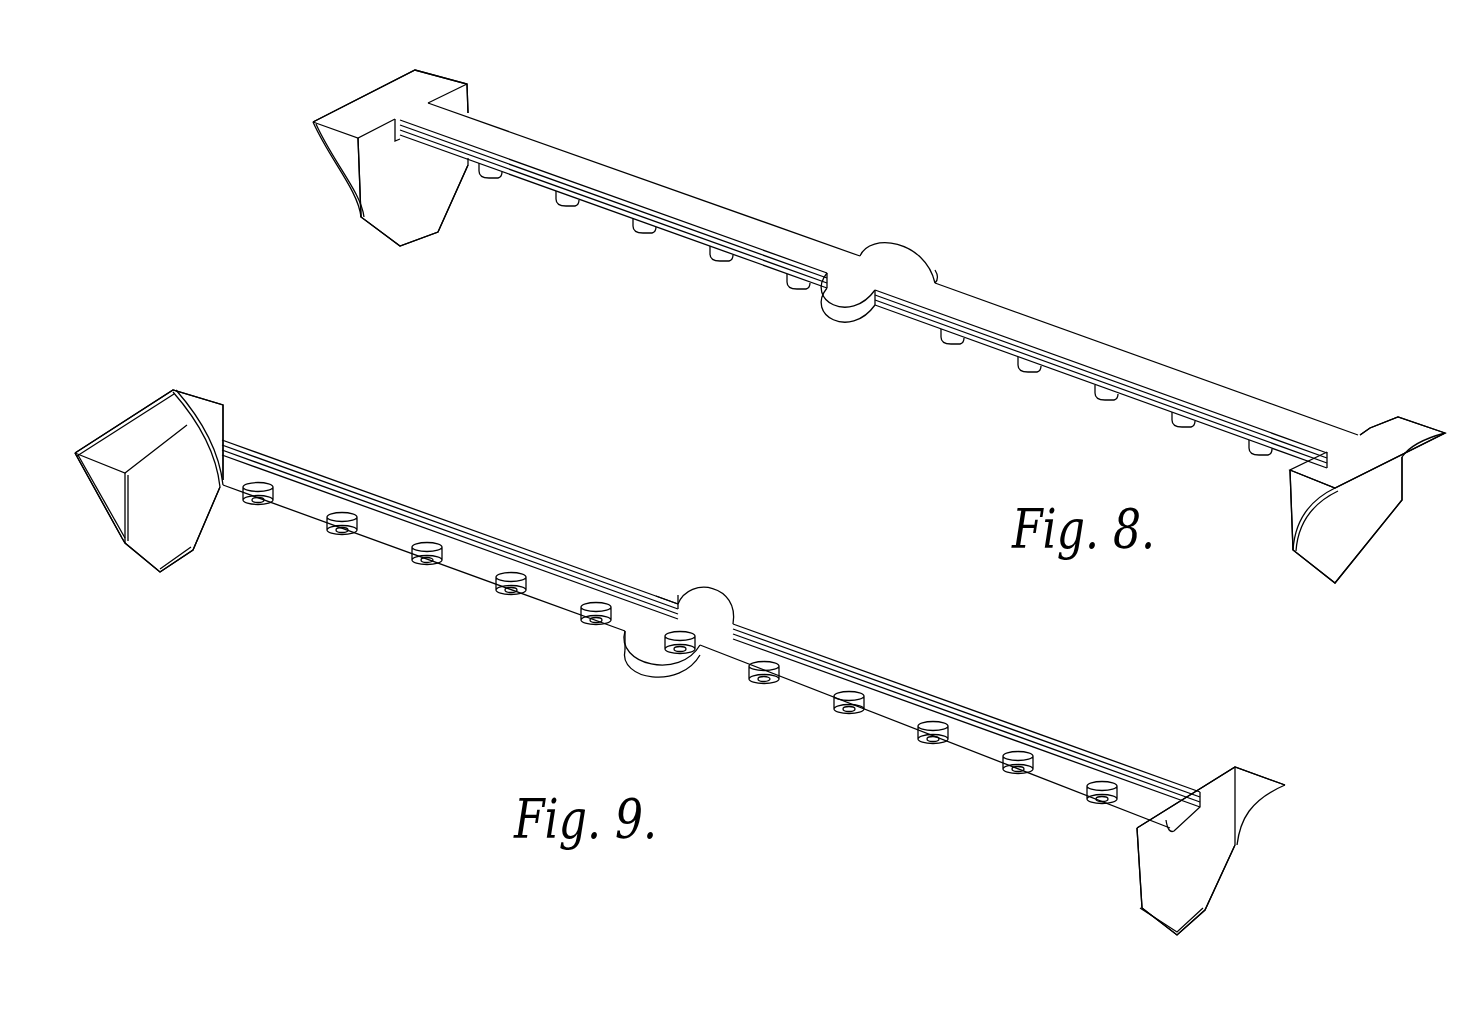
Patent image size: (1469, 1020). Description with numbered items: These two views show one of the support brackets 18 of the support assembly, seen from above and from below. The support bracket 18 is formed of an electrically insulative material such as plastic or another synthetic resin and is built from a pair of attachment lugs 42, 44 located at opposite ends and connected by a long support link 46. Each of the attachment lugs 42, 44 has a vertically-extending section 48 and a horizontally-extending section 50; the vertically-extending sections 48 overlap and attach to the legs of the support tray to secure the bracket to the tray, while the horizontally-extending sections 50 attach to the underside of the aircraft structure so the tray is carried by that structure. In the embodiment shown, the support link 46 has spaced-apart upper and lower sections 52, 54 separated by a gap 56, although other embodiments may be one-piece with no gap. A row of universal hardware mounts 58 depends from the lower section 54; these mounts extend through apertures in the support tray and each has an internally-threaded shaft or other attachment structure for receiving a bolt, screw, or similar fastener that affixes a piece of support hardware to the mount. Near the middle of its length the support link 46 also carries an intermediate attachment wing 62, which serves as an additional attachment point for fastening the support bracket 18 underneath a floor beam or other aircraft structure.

In FIG. 8, the support bracket 18 is at (862, 173).
In FIG. 9, the support bracket 18 is at (660, 551).
In FIG. 8, the attachment lug 42 is at (325, 178).
In FIG. 9, the attachment lug 42 is at (137, 578).
In FIG. 8, the attachment lug 44 is at (1342, 600).
In FIG. 9, the attachment lug 44 is at (1118, 899).
In FIG. 8, the support link 46 is at (992, 275).
In FIG. 9, the support link 46 is at (565, 661).
In FIG. 8, the vertically-extending section 48 is at (402, 224).
In FIG. 9, the vertically-extending section 48 is at (655, 694).
In FIG. 8, the horizontally-extending section 50 is at (372, 110).
In FIG. 9, the horizontally-extending section 50 is at (332, 484).
In FIG. 8, the upper section 52 is at (612, 181).
In FIG. 9, the upper section 52 is at (711, 616).
In FIG. 8, the lower section 54 is at (601, 209).
In FIG. 9, the lower section 54 is at (401, 543).
In FIG. 8, the gap 56 is at (769, 256).
In FIG. 9, the gap 56 is at (461, 538).
In FIG. 8, the universal hardware mount 58 is at (875, 309).
In FIG. 9, the universal hardware mount 58 is at (258, 504).
In FIG. 8, the intermediate attachment wing 62 is at (848, 293).
In FIG. 9, the intermediate attachment wing 62 is at (696, 656).